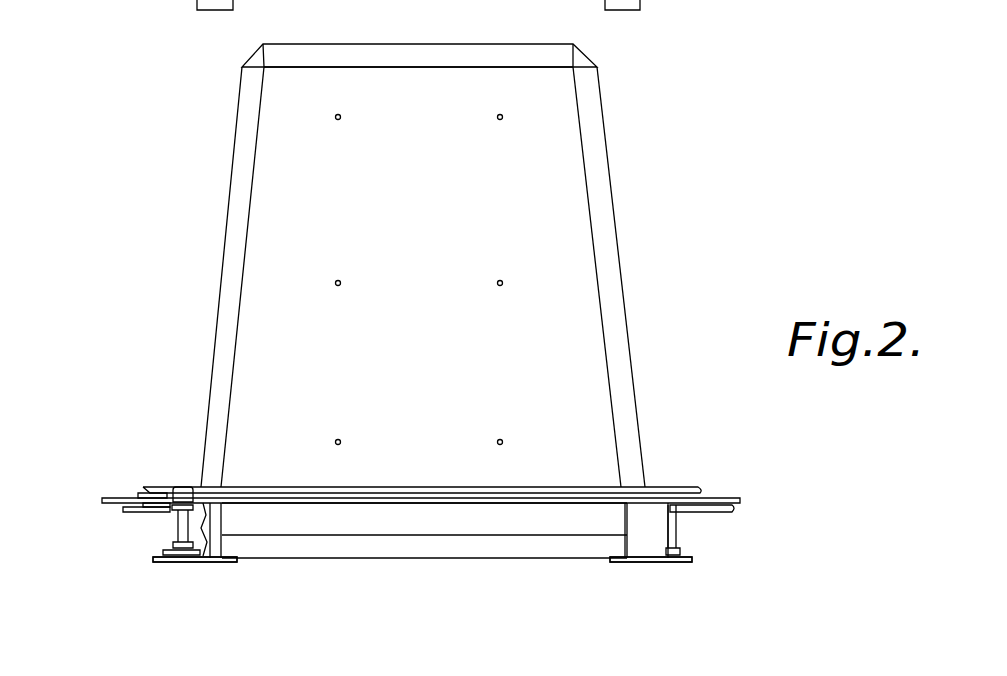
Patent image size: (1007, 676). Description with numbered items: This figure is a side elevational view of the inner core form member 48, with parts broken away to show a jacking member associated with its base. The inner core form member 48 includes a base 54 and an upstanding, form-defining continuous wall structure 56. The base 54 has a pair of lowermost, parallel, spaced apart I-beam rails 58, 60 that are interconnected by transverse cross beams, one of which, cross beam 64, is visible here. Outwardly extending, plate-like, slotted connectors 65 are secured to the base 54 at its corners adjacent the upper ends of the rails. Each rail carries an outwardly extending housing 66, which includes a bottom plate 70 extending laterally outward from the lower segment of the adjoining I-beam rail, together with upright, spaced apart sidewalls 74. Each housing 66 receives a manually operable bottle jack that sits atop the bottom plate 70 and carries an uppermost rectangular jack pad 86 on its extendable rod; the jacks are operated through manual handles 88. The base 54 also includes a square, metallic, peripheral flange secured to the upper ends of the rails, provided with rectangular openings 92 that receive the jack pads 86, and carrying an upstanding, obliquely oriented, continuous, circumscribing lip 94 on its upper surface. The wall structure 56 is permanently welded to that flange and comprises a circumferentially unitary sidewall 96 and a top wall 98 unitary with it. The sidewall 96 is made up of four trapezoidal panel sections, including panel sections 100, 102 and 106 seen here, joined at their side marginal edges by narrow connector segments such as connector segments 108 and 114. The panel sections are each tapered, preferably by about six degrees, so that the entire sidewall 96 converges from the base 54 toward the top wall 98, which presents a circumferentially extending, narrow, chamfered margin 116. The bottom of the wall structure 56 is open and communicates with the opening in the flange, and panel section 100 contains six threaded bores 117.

The inner core form member 48 is at (435, 243).
The base 54 is at (460, 524).
The wall structure 56 is at (386, 243).
The I-beam rail 58 is at (655, 0).
The I-beam rail 60 is at (168, 0).
The cross beam 64 is at (360, 548).
The slotted connector 65 is at (102, 505).
The housing 66 is at (650, 548).
The bottom plate 70 is at (157, 558).
The sidewall 74 is at (190, 553).
The jack pad 86 is at (185, 487).
The manual handle 88 is at (140, 510).
The rectangular opening 92 is at (137, 500).
The lip 94 is at (665, 487).
The sidewall 96 is at (632, 357).
The top wall 98 is at (440, 44).
The panel section 100 is at (612, 410).
The panel section 102 is at (607, 143).
The panel section 106 is at (230, 163).
The connector segment 108 is at (600, 263).
The connector segment 114 is at (228, 287).
The chamfered margin 116 is at (365, 53).
The threaded bore 117 is at (500, 117).